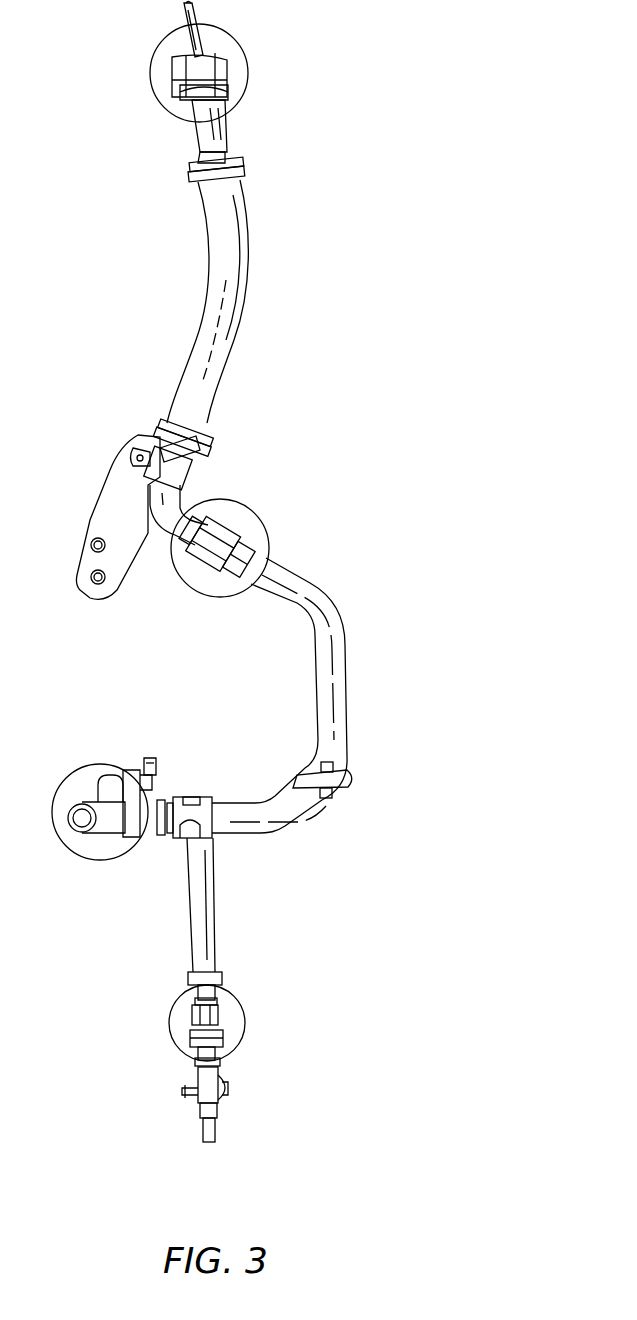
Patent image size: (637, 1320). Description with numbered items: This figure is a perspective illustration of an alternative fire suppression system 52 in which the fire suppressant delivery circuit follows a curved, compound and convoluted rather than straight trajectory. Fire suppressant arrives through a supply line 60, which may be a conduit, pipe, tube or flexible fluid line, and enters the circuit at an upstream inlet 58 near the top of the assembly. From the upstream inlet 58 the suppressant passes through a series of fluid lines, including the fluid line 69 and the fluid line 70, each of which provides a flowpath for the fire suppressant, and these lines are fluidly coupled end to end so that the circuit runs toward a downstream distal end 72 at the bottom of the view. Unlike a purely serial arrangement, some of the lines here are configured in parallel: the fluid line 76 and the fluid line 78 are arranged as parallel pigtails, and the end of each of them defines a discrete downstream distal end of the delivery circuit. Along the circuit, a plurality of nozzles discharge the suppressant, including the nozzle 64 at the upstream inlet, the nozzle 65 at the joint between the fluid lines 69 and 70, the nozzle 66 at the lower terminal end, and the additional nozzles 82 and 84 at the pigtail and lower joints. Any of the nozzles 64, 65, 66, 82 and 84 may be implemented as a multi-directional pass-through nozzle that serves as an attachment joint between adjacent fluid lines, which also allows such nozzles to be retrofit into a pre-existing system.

The fire suppression system 52 is at (423, 143).
The upstream inlet 58 is at (212, 52).
The supply line 60 is at (194, 11).
The nozzle 64 is at (178, 78).
The nozzle 65 is at (230, 523).
The nozzle 66 is at (197, 1108).
The fluid line 69 is at (248, 283).
The fluid line 70 is at (343, 683).
The downstream distal end 72 is at (227, 1118).
The fluid line 76 is at (216, 905).
The fluid line 78 is at (137, 840).
The nozzle 82 is at (105, 833).
The nozzle 84 is at (223, 1015).